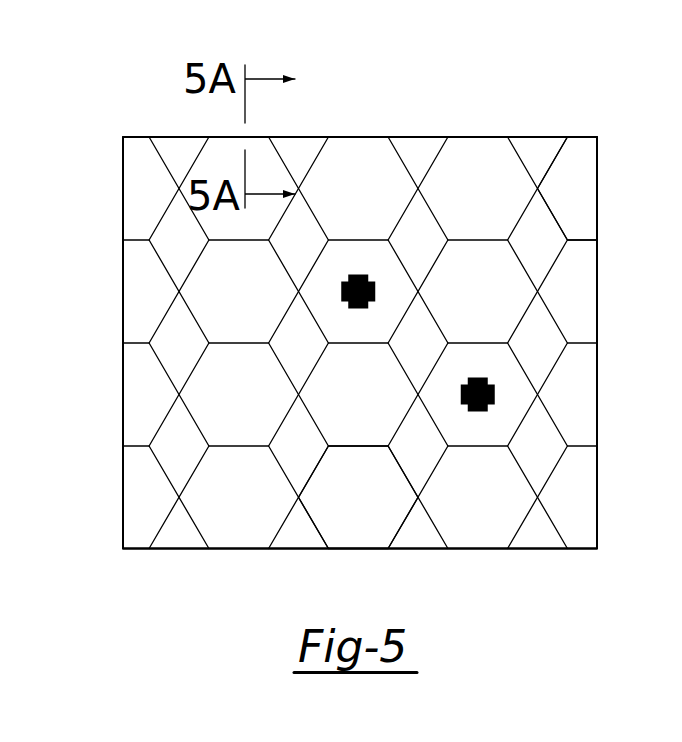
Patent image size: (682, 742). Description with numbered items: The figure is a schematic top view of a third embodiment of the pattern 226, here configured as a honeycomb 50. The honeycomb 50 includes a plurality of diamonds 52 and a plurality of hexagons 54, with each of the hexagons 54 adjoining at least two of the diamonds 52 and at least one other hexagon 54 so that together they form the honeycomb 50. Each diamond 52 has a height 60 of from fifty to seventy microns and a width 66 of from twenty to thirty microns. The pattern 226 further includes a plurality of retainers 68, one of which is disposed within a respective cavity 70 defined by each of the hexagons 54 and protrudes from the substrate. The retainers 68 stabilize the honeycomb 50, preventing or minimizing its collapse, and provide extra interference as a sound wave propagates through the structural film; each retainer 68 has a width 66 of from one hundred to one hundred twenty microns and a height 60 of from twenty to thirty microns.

The honeycomb 50 is at (545, 117).
The pattern 226 is at (97, 102).
The diamonds 52 is at (163, 417).
The hexagons 54 is at (193, 267).
The cavity 70 is at (570, 183).
The retainers 68 is at (358, 275).
The height 60 is at (298, 394).
The width 66 is at (328, 282).